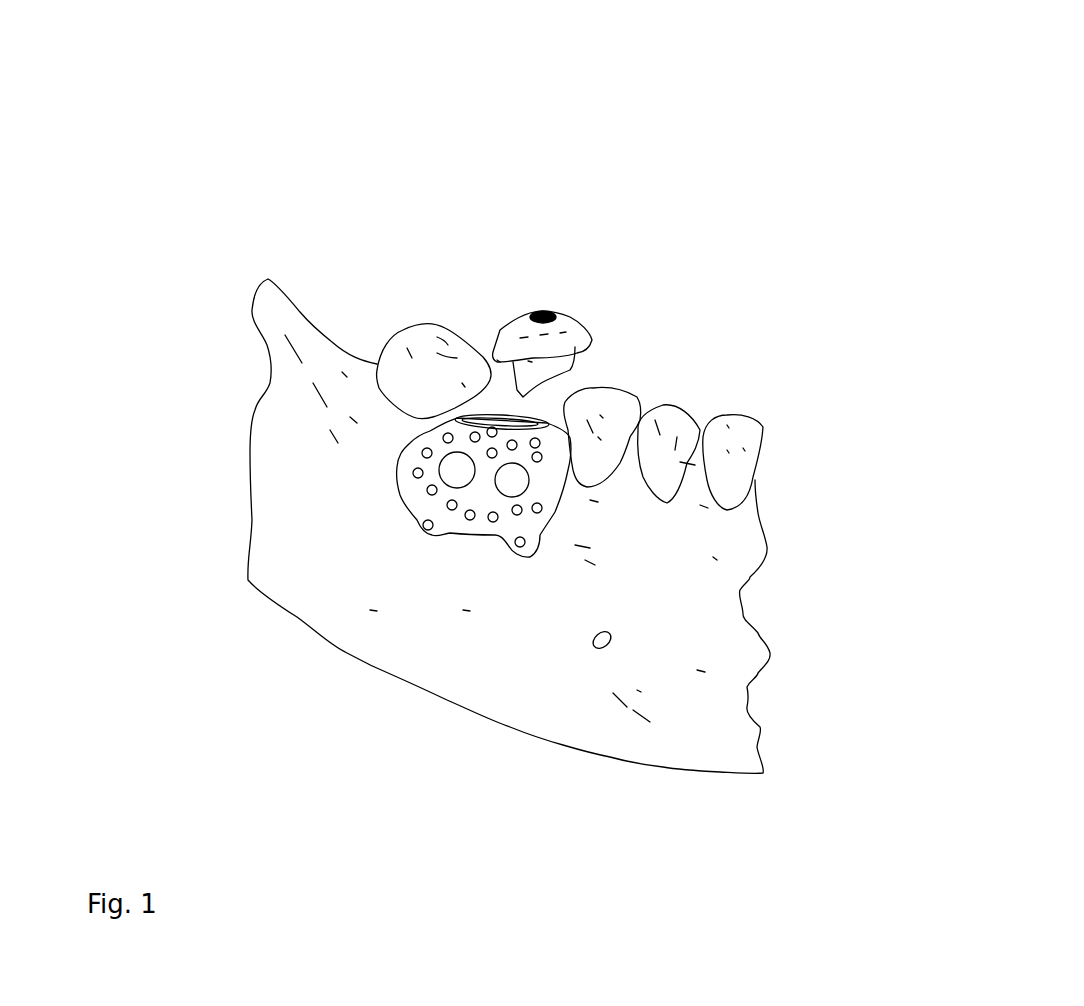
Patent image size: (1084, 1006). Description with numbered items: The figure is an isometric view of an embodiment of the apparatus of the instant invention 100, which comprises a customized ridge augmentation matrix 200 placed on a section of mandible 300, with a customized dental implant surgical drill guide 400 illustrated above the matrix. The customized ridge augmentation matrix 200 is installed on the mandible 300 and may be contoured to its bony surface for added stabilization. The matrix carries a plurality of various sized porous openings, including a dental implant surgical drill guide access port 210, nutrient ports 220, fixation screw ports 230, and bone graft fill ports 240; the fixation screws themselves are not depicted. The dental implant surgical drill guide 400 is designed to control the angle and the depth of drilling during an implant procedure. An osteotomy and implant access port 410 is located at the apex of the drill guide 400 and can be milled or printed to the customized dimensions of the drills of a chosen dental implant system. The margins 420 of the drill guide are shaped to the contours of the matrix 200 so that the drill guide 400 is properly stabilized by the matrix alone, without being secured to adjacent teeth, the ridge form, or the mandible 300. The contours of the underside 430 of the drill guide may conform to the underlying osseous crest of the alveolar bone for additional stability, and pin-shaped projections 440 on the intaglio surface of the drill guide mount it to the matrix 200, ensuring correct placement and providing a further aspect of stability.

The apparatus of the instant invention 100 is at (638, 327).
The customized ridge augmentation matrix 200 is at (403, 482).
The dental implant surgical drill guide access port 210 is at (505, 425).
The nutrient ports 220 is at (452, 505).
The fixation screw ports 230 is at (520, 542).
The bone graft fill ports 240 is at (527, 478).
The section of mandible 300 is at (567, 653).
The customized dental implant surgical drill guide 400 is at (662, 259).
The osteotomy and implant access port 410 is at (543, 320).
The margins of the dental implant surgical drill guide 420 is at (585, 345).
The contours of the underside of the dental implant surgical drill guide 430 is at (573, 375).
The intaglio surface pin-shaped projections 440 is at (530, 362).